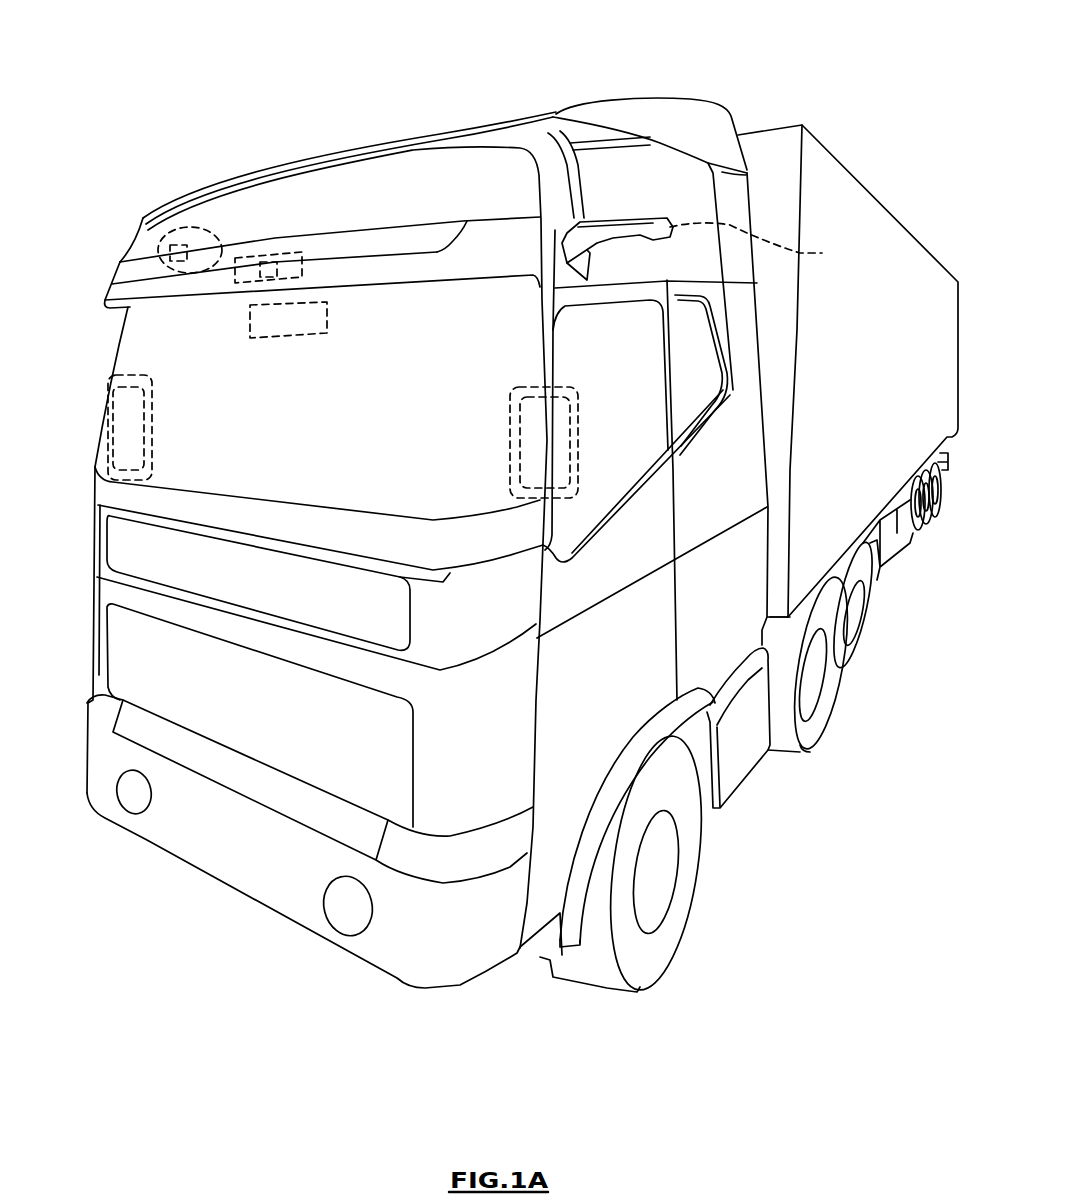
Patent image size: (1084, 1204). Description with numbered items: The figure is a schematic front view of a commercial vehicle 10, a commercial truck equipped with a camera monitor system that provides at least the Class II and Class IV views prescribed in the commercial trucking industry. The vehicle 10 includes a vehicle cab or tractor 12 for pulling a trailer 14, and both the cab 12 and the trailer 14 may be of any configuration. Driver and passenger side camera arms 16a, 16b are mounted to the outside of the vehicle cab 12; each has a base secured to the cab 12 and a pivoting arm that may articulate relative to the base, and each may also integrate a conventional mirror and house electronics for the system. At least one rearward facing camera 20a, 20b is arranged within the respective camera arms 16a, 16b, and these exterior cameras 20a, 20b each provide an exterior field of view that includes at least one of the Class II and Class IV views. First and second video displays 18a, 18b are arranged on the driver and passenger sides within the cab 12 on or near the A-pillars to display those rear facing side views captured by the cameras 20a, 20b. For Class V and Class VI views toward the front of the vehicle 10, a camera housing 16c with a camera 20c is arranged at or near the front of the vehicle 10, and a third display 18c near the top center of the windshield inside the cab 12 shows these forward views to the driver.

The commercial vehicle 10 is at (880, 64).
The vehicle cab 12 is at (92, 540).
The trailer 14 is at (920, 283).
The driver side camera arm 16a is at (613, 228).
The passenger side camera arm 16b is at (175, 227).
The camera housing 16c is at (260, 257).
The first video display 18a is at (520, 430).
The second video display 18b is at (133, 413).
The third display 18c is at (327, 313).
The rearward facing camera 20a is at (769, 245).
The rearward facing camera 20b is at (158, 233).
The camera 20c is at (260, 273).